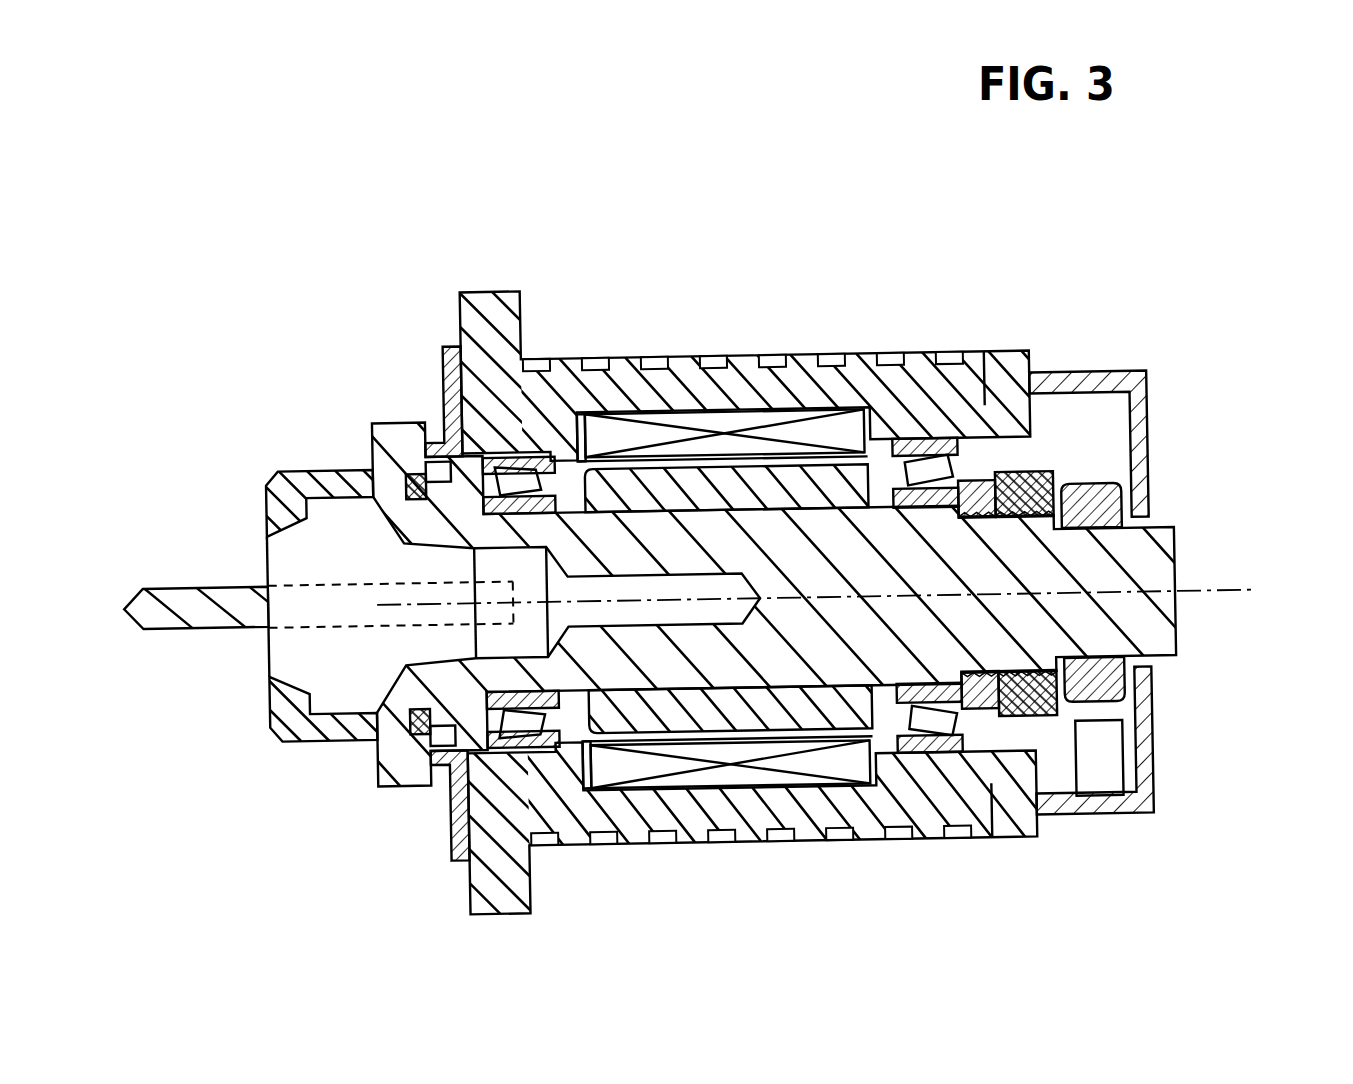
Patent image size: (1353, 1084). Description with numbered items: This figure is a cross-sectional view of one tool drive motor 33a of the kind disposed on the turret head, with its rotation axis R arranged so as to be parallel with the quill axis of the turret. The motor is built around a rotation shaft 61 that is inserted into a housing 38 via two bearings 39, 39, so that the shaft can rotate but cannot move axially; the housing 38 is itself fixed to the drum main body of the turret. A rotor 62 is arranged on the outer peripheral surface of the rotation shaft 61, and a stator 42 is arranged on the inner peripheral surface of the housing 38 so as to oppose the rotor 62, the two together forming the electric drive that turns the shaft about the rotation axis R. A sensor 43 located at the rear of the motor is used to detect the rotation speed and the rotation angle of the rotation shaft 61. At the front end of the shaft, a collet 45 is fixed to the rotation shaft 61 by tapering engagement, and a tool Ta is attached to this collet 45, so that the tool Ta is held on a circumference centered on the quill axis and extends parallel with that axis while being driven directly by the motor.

The tool drive motor 33a is at (437, 296).
The housing 38 is at (902, 356).
The bearings 39 is at (566, 480).
The stator 42 is at (815, 430).
The sensor 43 is at (1125, 738).
The collet 45 is at (346, 692).
The rotation shaft 61 is at (1182, 519).
The rotor 62 is at (690, 466).
The tool Ta is at (186, 586).
The rotation axis R is at (1212, 586).